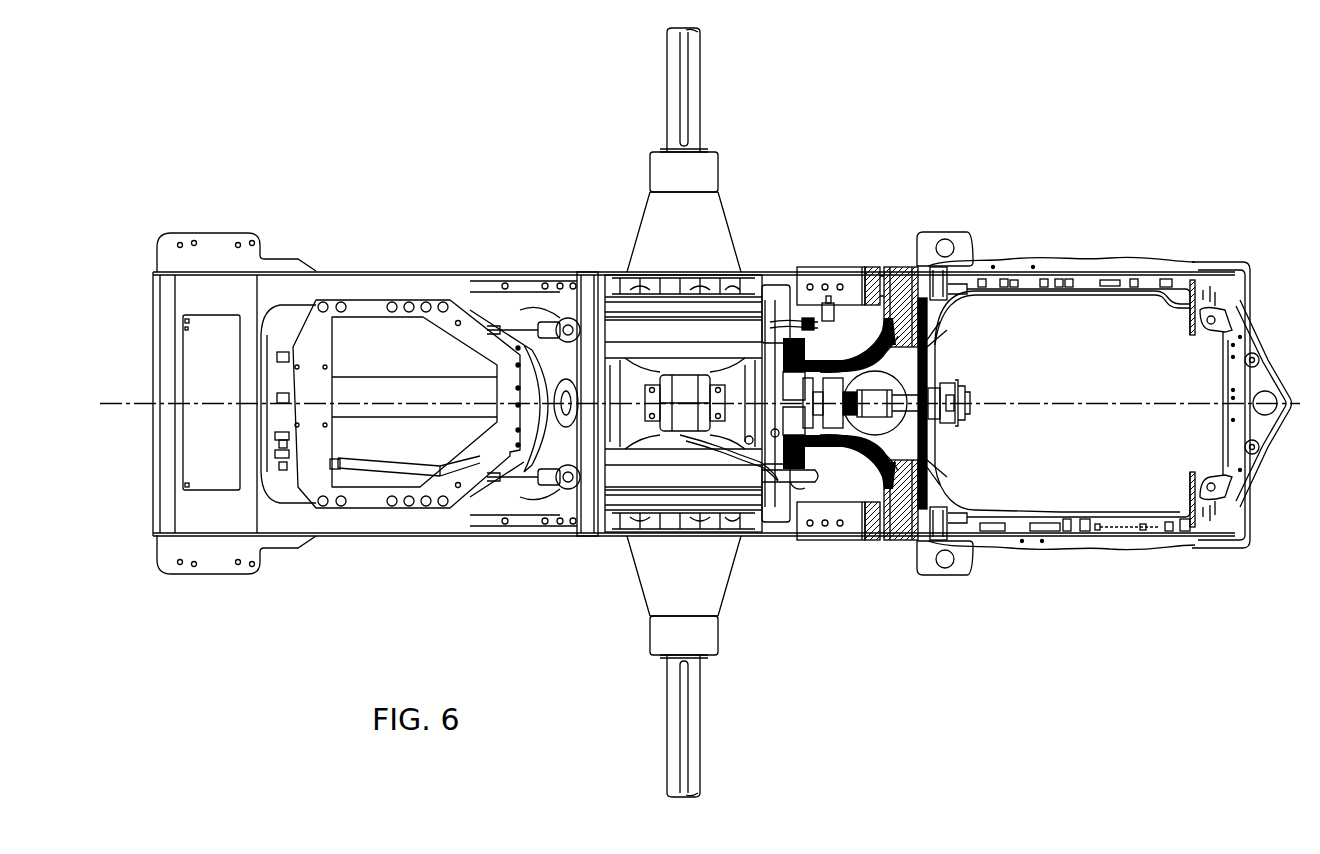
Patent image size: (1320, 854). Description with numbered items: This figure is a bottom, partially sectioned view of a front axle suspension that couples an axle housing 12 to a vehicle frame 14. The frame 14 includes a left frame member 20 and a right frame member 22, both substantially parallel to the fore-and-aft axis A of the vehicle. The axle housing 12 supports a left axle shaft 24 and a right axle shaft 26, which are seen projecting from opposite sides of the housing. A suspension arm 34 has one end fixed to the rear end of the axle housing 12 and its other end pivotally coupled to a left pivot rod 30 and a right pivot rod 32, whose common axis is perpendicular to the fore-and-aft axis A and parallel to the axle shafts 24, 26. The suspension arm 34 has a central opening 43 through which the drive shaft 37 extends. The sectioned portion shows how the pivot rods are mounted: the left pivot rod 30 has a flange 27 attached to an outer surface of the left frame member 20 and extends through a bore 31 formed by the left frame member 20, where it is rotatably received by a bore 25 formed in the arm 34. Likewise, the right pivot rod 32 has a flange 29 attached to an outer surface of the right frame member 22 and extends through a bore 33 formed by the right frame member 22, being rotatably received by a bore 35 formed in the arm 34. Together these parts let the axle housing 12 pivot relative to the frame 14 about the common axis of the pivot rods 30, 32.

The axle housing 12 is at (712, 568).
The vehicle frame 14 is at (484, 262).
The left frame member 20 is at (385, 292).
The right frame member 22 is at (396, 545).
The left axle shaft 24 is at (668, 105).
The bore 25 is at (935, 340).
The right axle shaft 26 is at (668, 735).
The flange 27 is at (928, 268).
The flange 29 is at (928, 546).
The left pivot rod 30 is at (905, 268).
The bore 31 is at (897, 268).
The right pivot rod 32 is at (902, 542).
The bore 33 is at (935, 490).
The suspension arm 34 is at (933, 446).
The bore 35 is at (880, 438).
The drive shaft 37 is at (952, 392).
The central opening 43 is at (935, 378).
The fore-and-aft axis A is at (1118, 403).